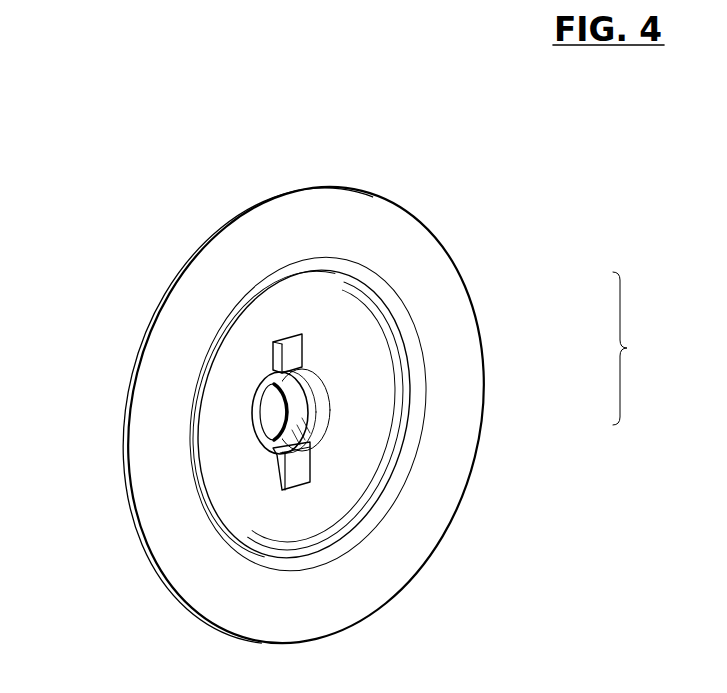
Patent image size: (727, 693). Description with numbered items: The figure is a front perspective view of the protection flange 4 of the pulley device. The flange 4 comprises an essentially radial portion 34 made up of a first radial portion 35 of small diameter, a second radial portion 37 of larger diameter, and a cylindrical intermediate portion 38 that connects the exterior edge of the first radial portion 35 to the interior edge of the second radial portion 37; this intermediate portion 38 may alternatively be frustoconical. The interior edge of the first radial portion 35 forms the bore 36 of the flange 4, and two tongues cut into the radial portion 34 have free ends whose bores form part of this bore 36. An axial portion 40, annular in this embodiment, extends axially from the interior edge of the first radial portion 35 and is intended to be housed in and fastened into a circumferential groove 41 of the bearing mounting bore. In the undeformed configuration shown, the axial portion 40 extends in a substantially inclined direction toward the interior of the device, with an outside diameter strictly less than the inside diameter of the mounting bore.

The protection flange 4 is at (183, 237).
The essentially radial portion 34 is at (637, 348).
The first radial portion 35 is at (392, 411).
The bore 36 is at (273, 373).
The second radial portion 37 is at (470, 332).
The cylindrical intermediate portion 38 is at (420, 375).
The axial portion 40 is at (303, 415).
The circumferential groove 41 is at (277, 475).